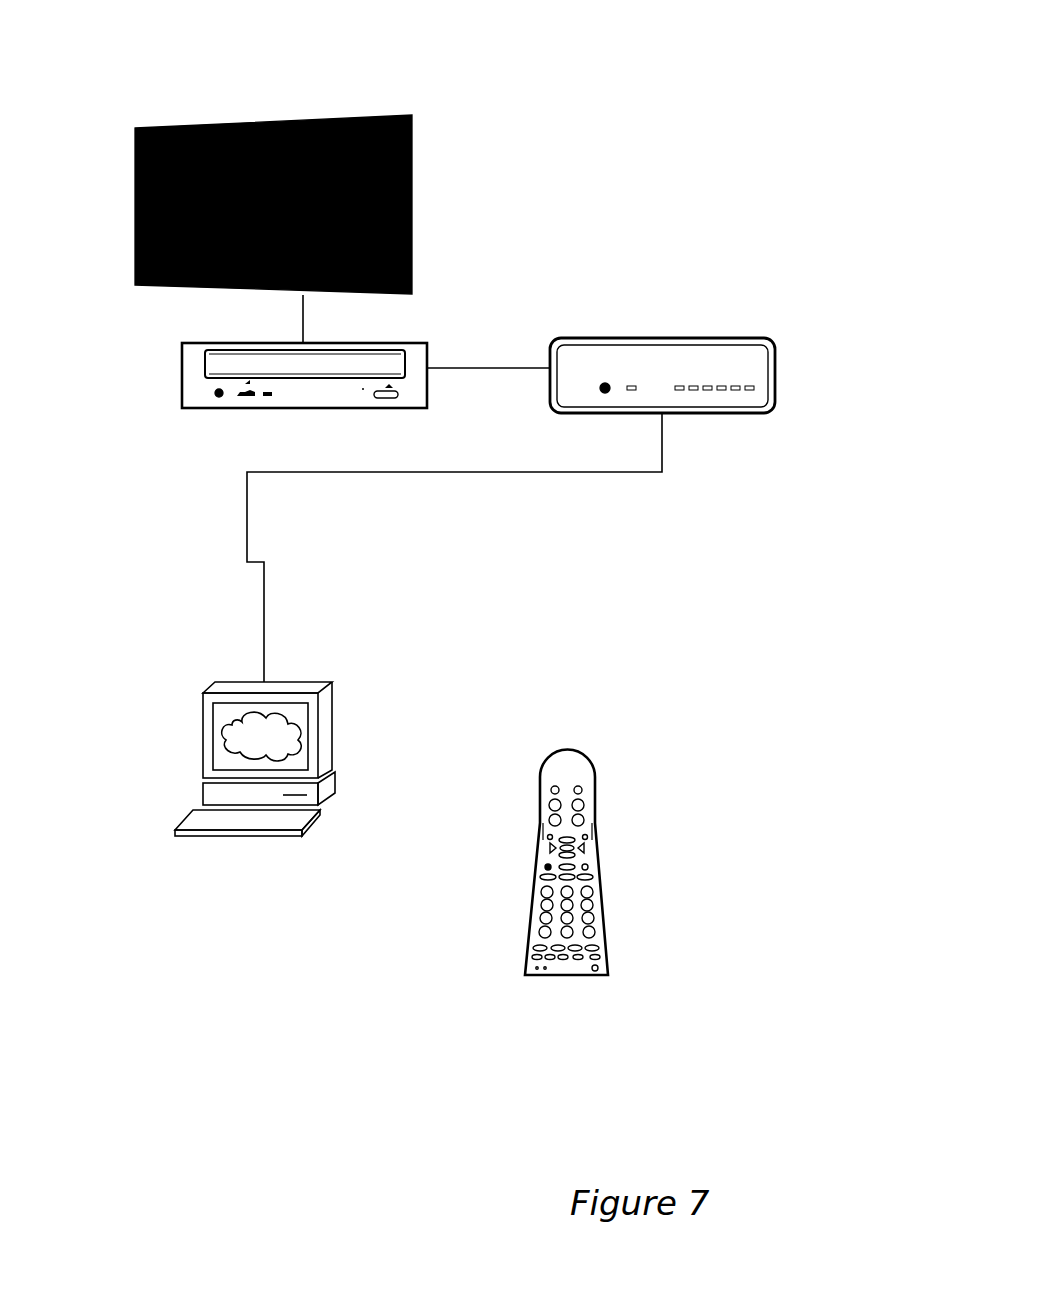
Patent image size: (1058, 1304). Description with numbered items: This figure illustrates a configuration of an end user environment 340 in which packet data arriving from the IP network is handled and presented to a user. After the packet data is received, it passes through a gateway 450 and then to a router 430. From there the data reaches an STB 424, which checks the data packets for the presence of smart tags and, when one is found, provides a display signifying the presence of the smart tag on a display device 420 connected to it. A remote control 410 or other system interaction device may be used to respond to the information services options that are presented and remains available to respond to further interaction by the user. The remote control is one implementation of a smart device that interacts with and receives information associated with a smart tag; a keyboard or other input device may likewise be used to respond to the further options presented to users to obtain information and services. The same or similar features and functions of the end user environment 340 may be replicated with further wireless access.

The end user environment 340 is at (755, 70).
The remote control 410 is at (580, 735).
The display device 420 is at (309, 88).
The STB 424 is at (221, 422).
The router 430 is at (659, 322).
The gateway 450 is at (195, 732).